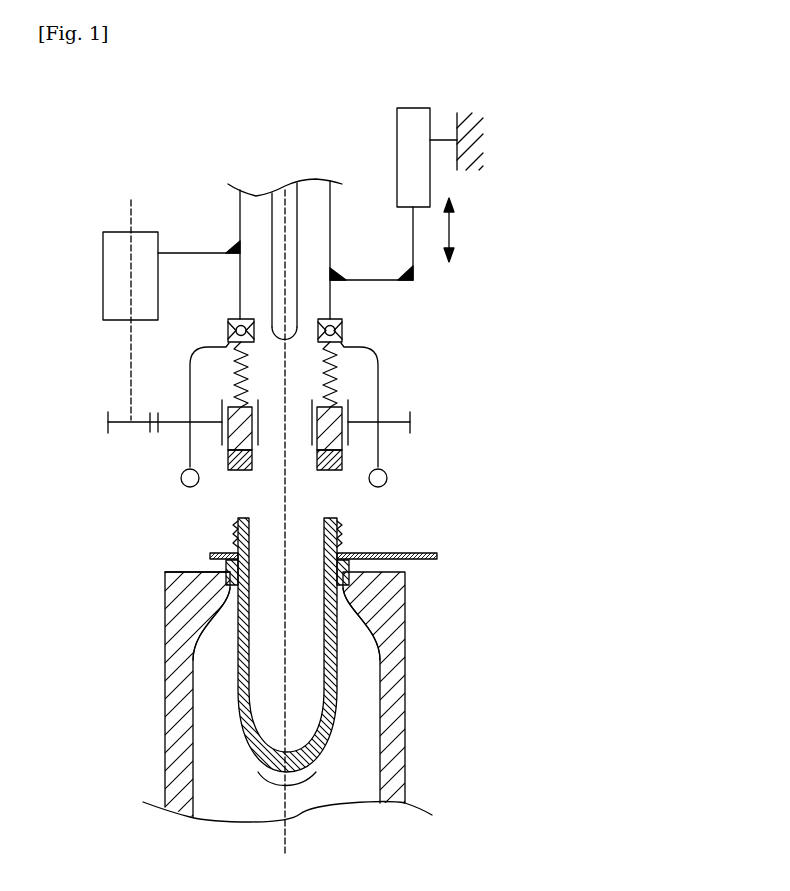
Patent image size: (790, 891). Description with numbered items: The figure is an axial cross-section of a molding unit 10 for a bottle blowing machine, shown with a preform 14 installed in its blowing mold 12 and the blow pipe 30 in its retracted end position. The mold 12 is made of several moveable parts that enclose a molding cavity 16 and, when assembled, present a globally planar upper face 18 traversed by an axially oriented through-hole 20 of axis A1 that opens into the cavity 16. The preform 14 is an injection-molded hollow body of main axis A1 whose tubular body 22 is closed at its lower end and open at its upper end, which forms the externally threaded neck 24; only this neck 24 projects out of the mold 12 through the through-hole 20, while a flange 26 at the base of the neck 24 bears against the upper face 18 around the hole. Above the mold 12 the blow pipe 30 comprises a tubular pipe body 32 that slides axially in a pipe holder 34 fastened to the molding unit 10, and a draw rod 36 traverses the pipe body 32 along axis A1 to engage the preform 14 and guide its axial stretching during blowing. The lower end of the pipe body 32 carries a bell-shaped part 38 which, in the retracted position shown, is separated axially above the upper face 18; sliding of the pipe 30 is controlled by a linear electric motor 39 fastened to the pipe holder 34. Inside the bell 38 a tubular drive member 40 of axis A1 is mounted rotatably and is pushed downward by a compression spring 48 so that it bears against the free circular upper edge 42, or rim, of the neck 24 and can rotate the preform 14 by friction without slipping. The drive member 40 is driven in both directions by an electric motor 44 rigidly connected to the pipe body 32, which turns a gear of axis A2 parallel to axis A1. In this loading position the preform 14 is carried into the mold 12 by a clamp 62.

The molding unit 10 is at (90, 357).
The blowing mold 12 is at (180, 655).
The preform 14 is at (232, 700).
The molding cavity 16 is at (226, 668).
The upper face 18 is at (175, 572).
The through-hole 20 is at (215, 588).
The body 22 is at (268, 745).
The neck 24 is at (340, 538).
The flange 26 is at (385, 605).
The blow pipe 30 is at (392, 323).
The pipe body 32 is at (240, 212).
The pipe holder 34 is at (475, 120).
The draw rod 36 is at (272, 212).
The bell-shaped part 38 is at (378, 400).
The linear electric motor 39 is at (411, 128).
The drive member 40 is at (230, 462).
The upper edge 42 is at (331, 627).
The electric motor 44 is at (120, 242).
The compression spring 48 is at (335, 376).
The clamp 62 is at (437, 560).
The axis A1 is at (285, 835).
The axis A2 is at (132, 218).